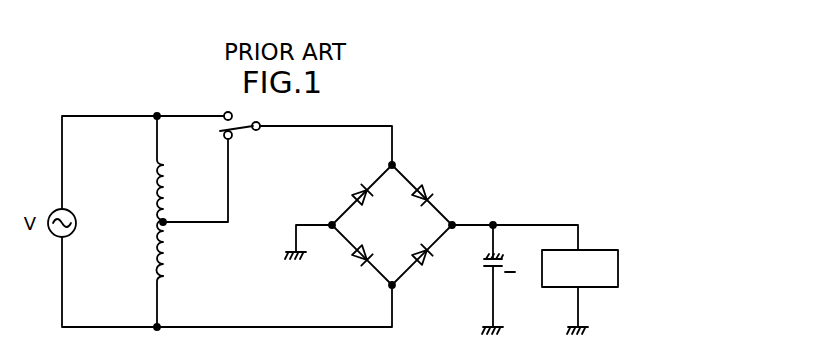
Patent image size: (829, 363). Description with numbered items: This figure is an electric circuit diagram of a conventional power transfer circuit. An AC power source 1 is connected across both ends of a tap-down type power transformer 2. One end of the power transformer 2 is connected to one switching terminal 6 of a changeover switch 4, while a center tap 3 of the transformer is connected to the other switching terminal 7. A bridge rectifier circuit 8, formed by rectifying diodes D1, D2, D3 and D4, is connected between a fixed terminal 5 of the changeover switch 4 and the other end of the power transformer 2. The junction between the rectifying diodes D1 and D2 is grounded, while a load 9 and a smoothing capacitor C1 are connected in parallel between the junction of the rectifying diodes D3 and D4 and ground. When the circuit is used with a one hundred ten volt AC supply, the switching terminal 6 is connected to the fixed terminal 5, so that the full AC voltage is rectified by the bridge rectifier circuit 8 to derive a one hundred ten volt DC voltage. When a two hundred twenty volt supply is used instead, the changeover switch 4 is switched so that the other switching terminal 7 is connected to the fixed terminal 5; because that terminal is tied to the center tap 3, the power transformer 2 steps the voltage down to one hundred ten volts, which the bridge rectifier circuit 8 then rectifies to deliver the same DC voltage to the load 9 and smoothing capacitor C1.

The AC power source 1 is at (75, 213).
The tap-down type power transformer 2 is at (146, 227).
The tap 3 is at (167, 219).
The changeover switch 4 is at (243, 129).
The fixed terminal 5 is at (262, 122).
The switching terminal 6 is at (224, 113).
The switching terminal 7 is at (224, 139).
The bridge rectifier circuit 8 is at (382, 212).
The load 9 is at (598, 250).
The rectifying diode D1 is at (357, 190).
The rectifying diode D2 is at (370, 251).
The rectifying diode D3 is at (433, 191).
The rectifying diode D4 is at (428, 263).
The smoothing capacitor C1 is at (497, 268).